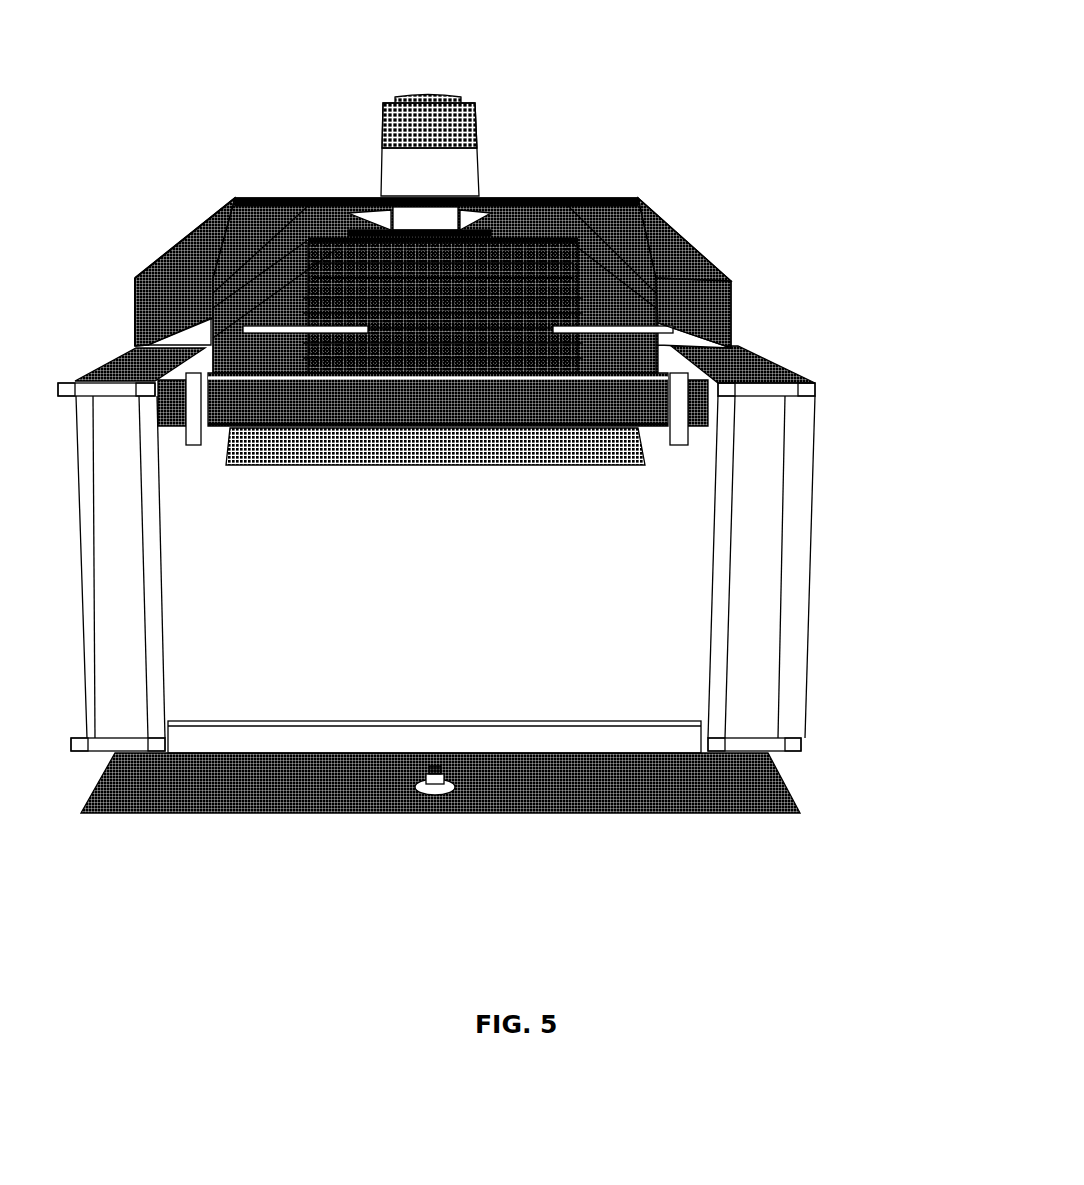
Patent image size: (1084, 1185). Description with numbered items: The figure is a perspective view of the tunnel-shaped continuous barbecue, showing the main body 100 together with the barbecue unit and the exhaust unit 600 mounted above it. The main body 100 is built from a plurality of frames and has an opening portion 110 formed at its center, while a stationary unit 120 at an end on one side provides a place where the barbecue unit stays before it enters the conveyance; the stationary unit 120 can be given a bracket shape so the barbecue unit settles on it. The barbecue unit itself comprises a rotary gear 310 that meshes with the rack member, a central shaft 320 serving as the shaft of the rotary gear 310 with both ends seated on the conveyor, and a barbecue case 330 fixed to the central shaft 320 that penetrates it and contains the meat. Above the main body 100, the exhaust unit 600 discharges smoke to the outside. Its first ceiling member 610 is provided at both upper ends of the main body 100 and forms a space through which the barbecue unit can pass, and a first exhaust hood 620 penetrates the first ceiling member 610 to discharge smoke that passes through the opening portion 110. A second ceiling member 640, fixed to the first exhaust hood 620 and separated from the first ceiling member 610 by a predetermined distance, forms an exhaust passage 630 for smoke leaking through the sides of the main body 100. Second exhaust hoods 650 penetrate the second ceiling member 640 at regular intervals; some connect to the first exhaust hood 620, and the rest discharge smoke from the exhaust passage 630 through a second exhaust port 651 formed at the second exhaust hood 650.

The main body 100 is at (822, 622).
The opening portion 110 is at (235, 190).
The stationary unit 120 is at (330, 392).
The rotary gear 310 is at (725, 273).
The central shaft 320 is at (725, 304).
The barbecue case 330 is at (468, 340).
The exhaust unit 600 is at (438, 523).
The first ceiling member 610 is at (133, 291).
The first exhaust hood 620 is at (492, 190).
The exhaust passage 630 is at (133, 262).
The second ceiling member 640 is at (190, 218).
The second exhaust hood 650 is at (455, 113).
The second exhaust port 651 is at (420, 88).